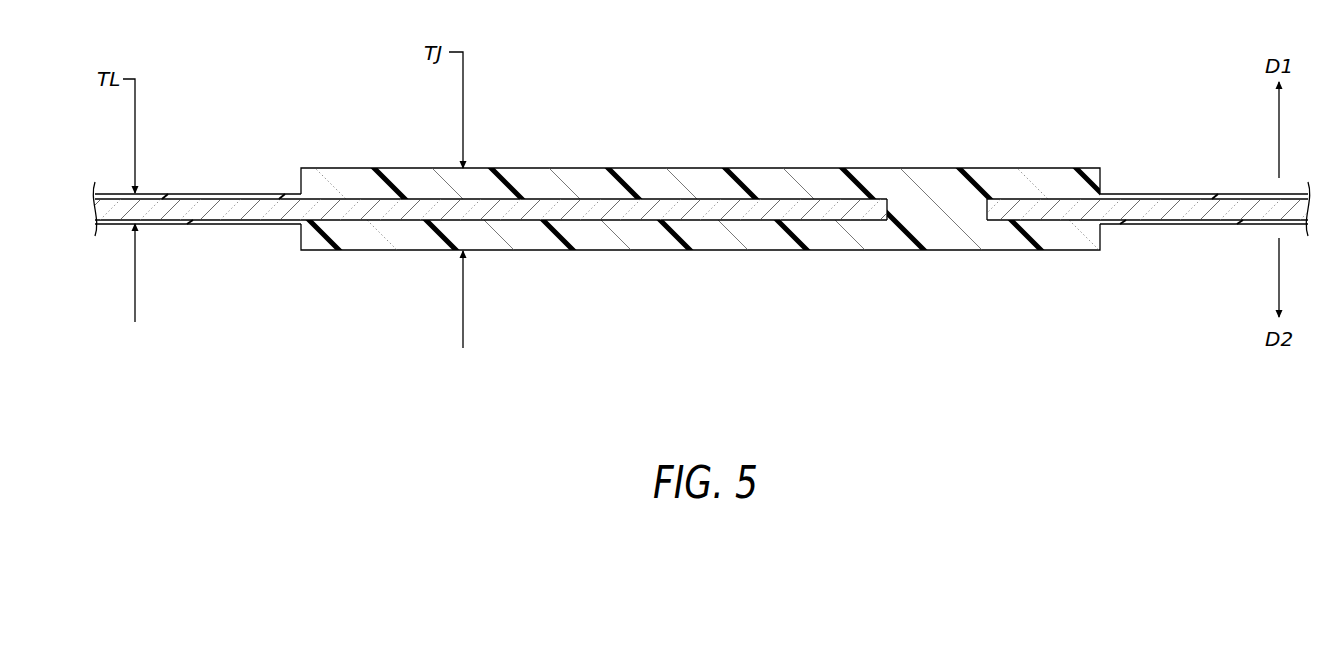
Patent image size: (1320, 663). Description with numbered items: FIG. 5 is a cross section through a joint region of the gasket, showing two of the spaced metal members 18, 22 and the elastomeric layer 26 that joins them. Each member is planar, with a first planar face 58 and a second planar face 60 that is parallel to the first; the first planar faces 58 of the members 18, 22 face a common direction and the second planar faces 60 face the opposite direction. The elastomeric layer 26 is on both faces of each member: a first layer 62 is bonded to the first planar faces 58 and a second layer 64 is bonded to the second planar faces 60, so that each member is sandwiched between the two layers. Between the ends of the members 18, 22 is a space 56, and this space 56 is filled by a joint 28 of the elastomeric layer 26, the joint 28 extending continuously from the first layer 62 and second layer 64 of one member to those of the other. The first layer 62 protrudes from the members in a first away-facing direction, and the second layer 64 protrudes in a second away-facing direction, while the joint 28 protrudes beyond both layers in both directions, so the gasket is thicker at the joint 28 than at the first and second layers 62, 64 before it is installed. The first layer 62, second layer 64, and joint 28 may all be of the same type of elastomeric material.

The member 18 is at (1214, 211).
The member 22 is at (186, 211).
The elastomeric layer 26 is at (916, 142).
The joint 28 is at (686, 168).
The space 56 is at (941, 216).
The first planar face 58 is at (252, 194).
The second planar face 60 is at (262, 225).
The first layer 62 is at (212, 194).
The second layer 64 is at (205, 225).